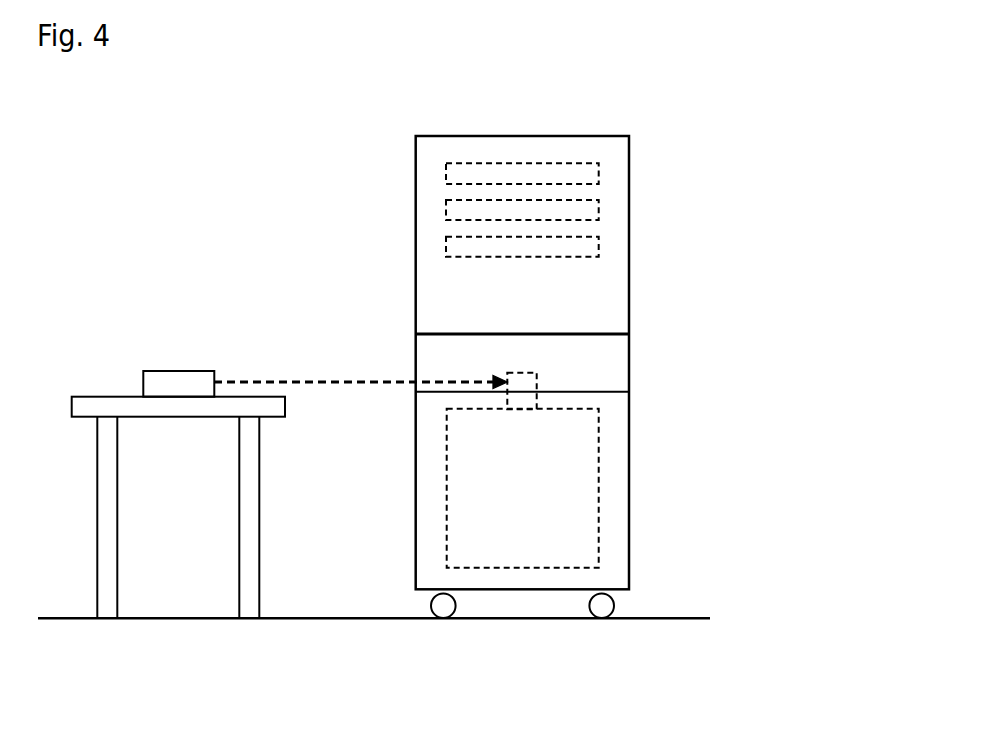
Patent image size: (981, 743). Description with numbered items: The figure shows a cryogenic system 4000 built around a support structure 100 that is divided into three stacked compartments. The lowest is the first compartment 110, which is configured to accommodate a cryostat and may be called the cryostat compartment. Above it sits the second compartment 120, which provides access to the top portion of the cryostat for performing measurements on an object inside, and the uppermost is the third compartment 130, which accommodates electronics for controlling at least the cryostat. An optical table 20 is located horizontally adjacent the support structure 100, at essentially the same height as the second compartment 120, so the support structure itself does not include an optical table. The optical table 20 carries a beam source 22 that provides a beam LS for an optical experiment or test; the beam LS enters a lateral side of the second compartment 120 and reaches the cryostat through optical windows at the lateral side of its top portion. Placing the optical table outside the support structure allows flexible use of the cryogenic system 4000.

The cryogenic system 4000 is at (727, 79).
The support structure 100 is at (693, 148).
The third compartment 130 is at (629, 243).
The second compartment 120 is at (629, 363).
The first compartment 110 is at (629, 488).
The optical table 20 is at (62, 368).
The beam source 22 is at (182, 370).
The beam LS is at (327, 379).